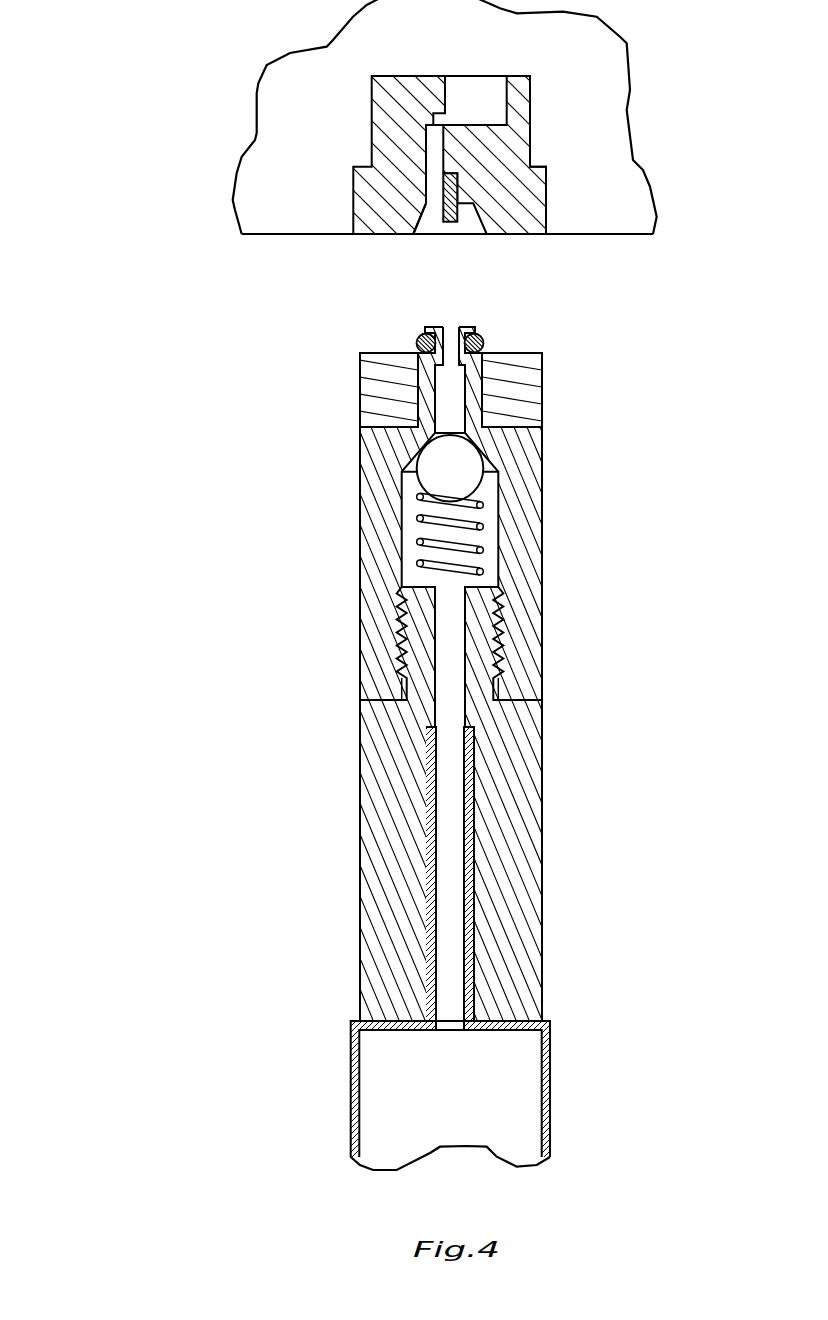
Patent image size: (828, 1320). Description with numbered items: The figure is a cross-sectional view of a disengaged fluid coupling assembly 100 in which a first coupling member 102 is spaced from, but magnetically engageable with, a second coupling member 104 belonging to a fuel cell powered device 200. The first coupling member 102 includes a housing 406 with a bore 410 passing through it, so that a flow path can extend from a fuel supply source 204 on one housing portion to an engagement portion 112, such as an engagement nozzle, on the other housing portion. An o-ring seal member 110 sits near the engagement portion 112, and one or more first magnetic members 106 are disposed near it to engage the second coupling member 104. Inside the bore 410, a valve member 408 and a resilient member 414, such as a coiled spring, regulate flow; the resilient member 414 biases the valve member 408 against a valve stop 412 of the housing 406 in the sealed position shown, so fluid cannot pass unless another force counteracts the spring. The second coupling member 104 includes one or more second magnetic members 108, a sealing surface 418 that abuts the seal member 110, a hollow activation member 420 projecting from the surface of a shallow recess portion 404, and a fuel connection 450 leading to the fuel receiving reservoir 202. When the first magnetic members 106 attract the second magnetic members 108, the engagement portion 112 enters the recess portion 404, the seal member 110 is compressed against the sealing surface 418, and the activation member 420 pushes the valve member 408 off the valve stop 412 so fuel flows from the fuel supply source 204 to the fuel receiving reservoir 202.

The fluid coupling assembly 100 is at (129, 77).
The fuel cell powered device 200 is at (238, 177).
The fuel receiving reservoir 202 is at (493, 80).
The second coupling member 104 is at (364, 115).
The fuel connection 450 is at (434, 163).
The activation member 420 is at (452, 193).
The sealing surface 418 is at (423, 227).
The recess portion 404 is at (469, 227).
The second magnetic member 108 is at (530, 236).
The engagement portion 112 is at (425, 328).
The seal member 110 is at (480, 334).
The valve stop 412 is at (433, 358).
The first coupling member 102 is at (347, 393).
The valve member 408 is at (460, 397).
The first magnetic member 106 is at (543, 412).
The bore 410 is at (493, 485).
The resilient member 414 is at (480, 528).
The housing 406 is at (542, 636).
The fuel supply source 204 is at (550, 1070).